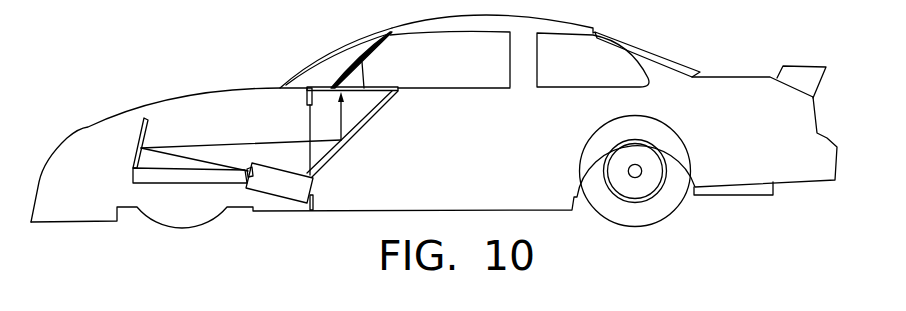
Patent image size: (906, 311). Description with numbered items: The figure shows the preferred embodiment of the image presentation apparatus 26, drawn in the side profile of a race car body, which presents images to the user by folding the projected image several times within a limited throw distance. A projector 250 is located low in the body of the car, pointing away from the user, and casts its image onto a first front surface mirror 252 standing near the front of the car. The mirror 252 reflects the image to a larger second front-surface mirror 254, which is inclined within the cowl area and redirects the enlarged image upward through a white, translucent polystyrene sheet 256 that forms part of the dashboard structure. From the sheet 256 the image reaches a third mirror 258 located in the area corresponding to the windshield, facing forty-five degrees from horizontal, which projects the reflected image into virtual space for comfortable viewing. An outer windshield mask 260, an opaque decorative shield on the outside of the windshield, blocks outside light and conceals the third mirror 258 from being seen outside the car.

The image presentation apparatus 26 is at (142, 239).
The projector 250 is at (283, 190).
The first front surface mirror 252 is at (138, 133).
The second front-surface mirror 254 is at (363, 130).
The translucent polystyrene sheet 256 is at (378, 87).
The third mirror 258 is at (374, 54).
The outer windshield mask 260 is at (353, 50).